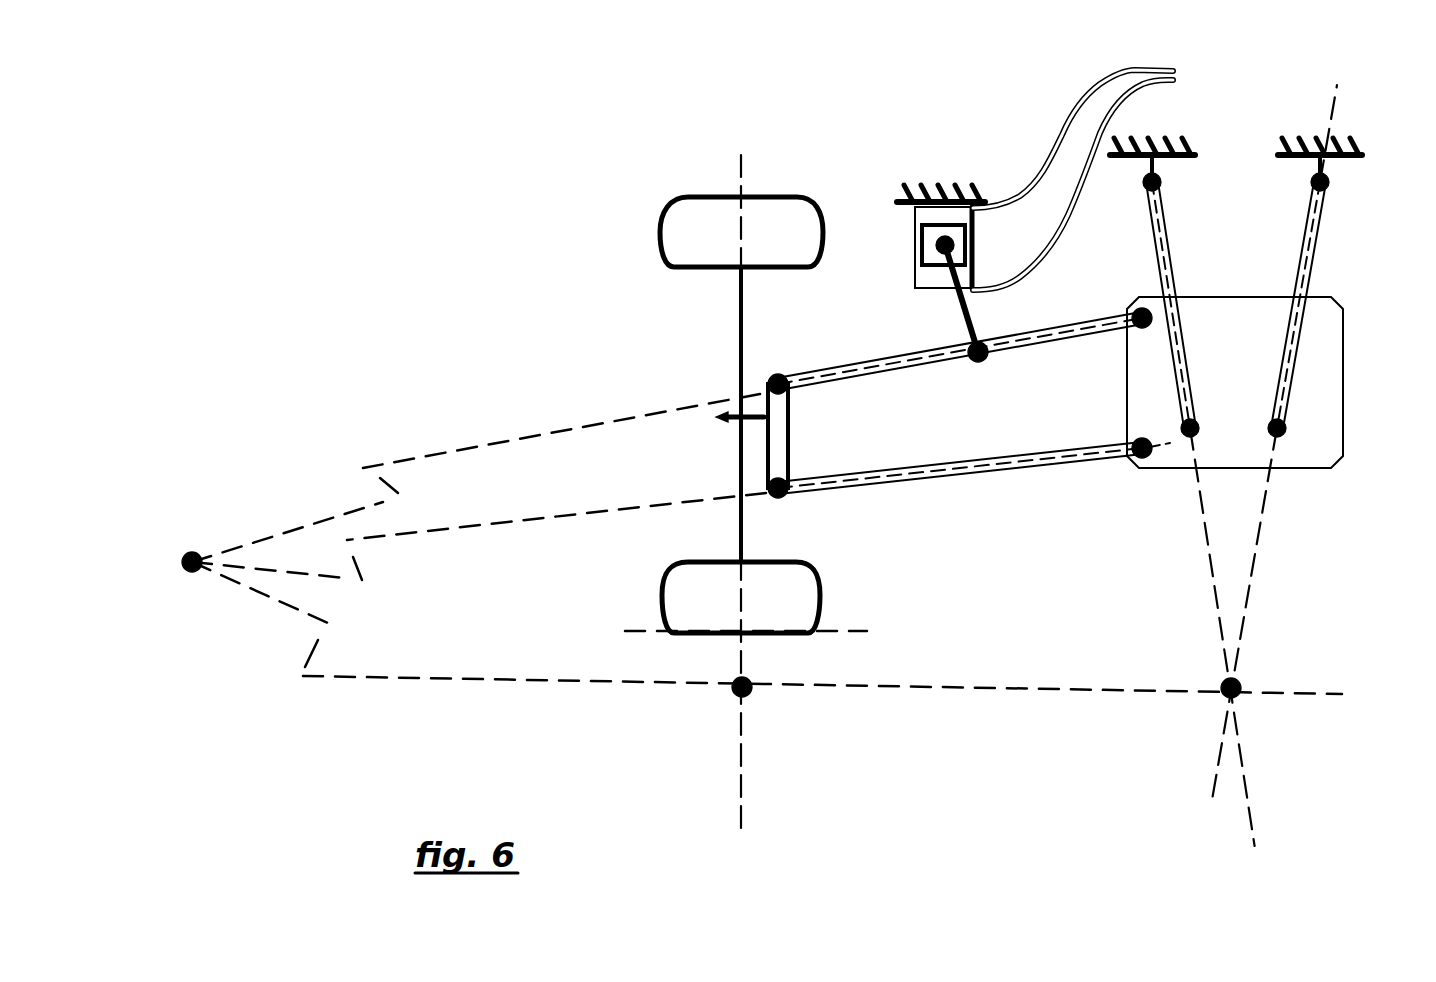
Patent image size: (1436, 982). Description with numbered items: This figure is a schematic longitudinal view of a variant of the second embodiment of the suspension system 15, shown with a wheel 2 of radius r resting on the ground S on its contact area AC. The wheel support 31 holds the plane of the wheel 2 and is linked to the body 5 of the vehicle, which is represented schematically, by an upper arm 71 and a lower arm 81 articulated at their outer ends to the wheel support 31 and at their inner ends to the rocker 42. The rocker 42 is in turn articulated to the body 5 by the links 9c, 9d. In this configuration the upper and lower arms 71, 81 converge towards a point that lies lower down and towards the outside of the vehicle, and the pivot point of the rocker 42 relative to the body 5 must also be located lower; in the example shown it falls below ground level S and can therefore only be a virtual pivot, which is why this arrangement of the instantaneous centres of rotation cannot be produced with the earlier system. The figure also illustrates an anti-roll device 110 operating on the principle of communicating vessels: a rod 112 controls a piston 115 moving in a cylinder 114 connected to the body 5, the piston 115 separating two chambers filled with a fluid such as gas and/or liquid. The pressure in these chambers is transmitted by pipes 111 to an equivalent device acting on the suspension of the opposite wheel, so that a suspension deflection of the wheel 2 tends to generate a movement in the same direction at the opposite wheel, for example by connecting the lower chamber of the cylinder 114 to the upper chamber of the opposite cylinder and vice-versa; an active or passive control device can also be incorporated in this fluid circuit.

The wheel 2 is at (657, 243).
The suspension system 15 is at (536, 314).
The wheel hub / upright 31 is at (789, 471).
The upper arm 71 is at (868, 361).
The lower arm 81 is at (1060, 451).
The chassis / body 42 is at (1174, 463).
The link 9c is at (1162, 231).
The link 9d is at (1318, 232).
The body 5 is at (971, 187).
The anti-roll device 110 is at (855, 160).
The pipes 111 is at (1103, 130).
The rod 112 is at (958, 312).
The cylinder 114 is at (918, 275).
The piston 115 is at (930, 240).
The ground S is at (616, 630).
The contact area AC is at (718, 634).